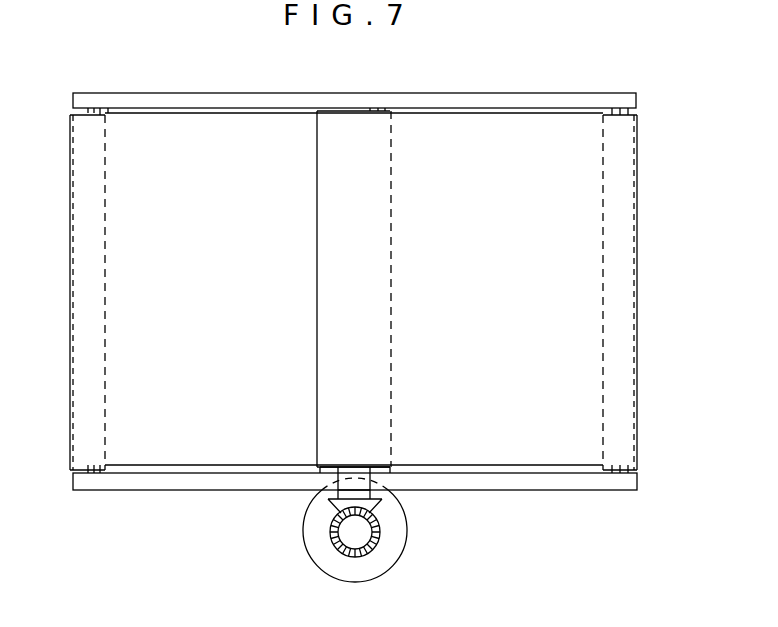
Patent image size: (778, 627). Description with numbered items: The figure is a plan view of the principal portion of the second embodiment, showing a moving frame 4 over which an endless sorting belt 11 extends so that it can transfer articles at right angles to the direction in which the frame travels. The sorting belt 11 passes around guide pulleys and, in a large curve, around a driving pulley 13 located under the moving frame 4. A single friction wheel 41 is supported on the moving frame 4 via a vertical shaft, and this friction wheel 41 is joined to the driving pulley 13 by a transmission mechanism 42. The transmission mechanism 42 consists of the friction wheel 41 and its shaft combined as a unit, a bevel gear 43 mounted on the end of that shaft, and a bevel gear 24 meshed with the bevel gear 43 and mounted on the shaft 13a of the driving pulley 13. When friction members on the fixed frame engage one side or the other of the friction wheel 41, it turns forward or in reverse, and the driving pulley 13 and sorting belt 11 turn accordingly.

The moving frame 4 is at (578, 95).
The sorting belt 11 is at (462, 126).
The driving pulley 13 is at (391, 357).
The shaft of the driving pulley 13a is at (300, 490).
The bevel gear 24 is at (380, 504).
The friction wheel 41 is at (398, 562).
The transmission mechanism 42 is at (468, 555).
The bevel gear 43 is at (333, 541).